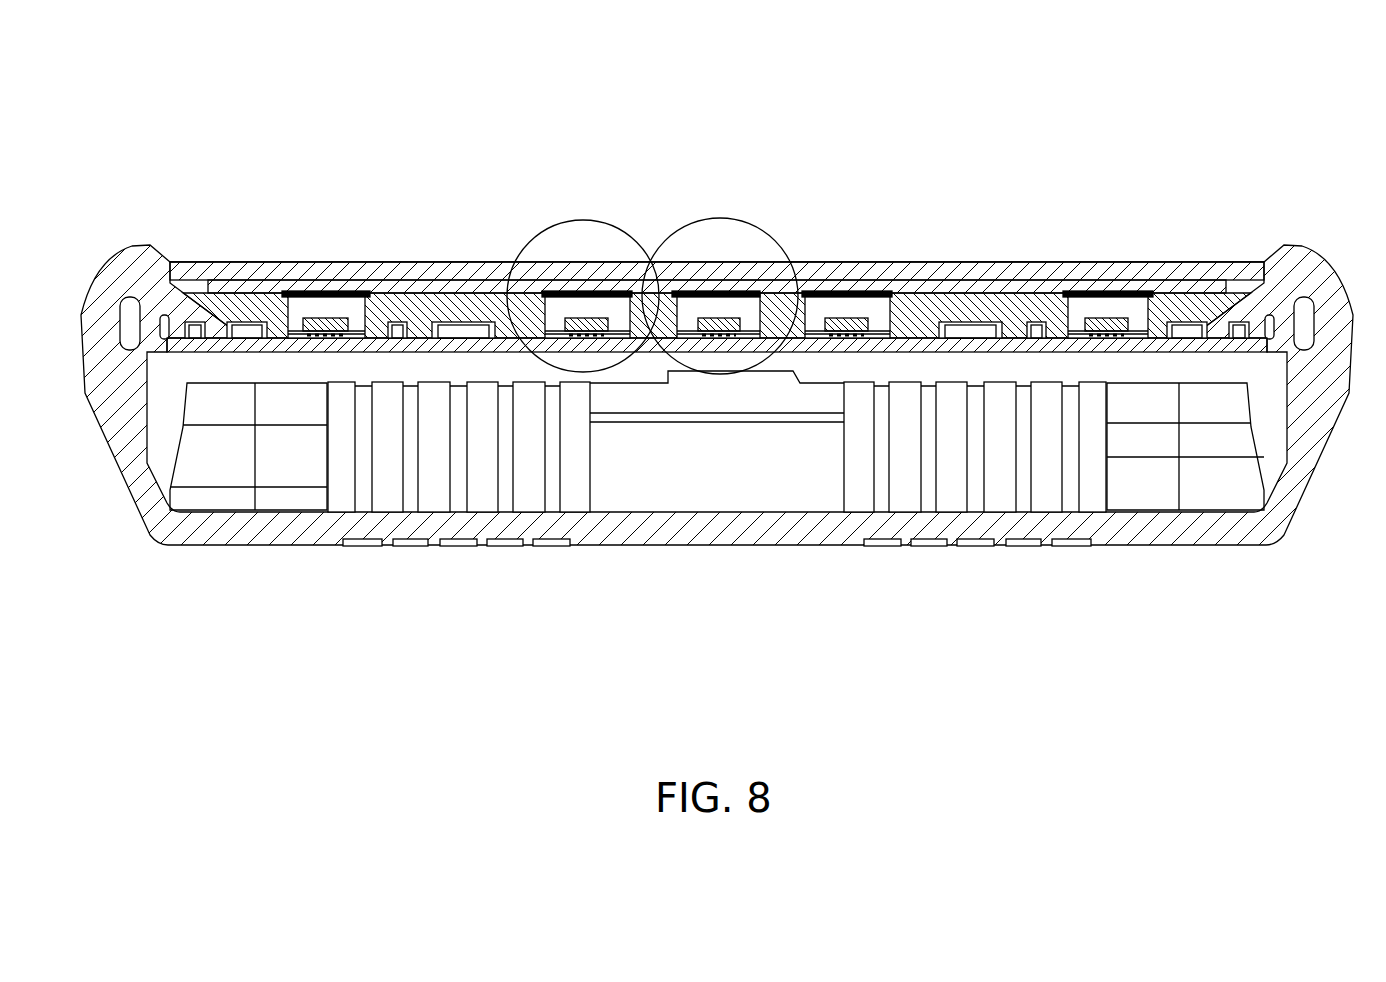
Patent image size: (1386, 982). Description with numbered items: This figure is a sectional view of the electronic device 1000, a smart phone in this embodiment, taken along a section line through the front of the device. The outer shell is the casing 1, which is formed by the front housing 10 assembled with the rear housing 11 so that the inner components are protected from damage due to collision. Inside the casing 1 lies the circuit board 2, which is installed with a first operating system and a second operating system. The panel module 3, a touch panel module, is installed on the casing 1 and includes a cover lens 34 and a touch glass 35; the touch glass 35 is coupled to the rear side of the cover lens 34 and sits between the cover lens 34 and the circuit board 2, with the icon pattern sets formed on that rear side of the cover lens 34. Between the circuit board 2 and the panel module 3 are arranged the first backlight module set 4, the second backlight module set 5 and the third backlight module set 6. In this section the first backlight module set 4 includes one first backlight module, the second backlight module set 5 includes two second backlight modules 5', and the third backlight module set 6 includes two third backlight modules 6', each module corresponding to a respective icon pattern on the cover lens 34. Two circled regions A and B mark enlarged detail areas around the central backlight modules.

The electronic device 1000 is at (705, 408).
The casing 1 is at (705, 339).
The front housing 10 is at (122, 273).
The rear housing 11 is at (97, 387).
The circuit board 2 is at (927, 343).
The panel module 3 is at (717, 462).
The cover lens 34 is at (1025, 270).
The touch glass 35 is at (977, 285).
The first backlight module set 4 is at (721, 318).
The second backlight module set 5 is at (716, 486).
The second backlight module 5' is at (716, 459).
The third backlight module set 6 is at (715, 535).
The third backlight module 6' is at (715, 508).
The enlarged region A is at (761, 211).
The enlarged region B is at (541, 211).